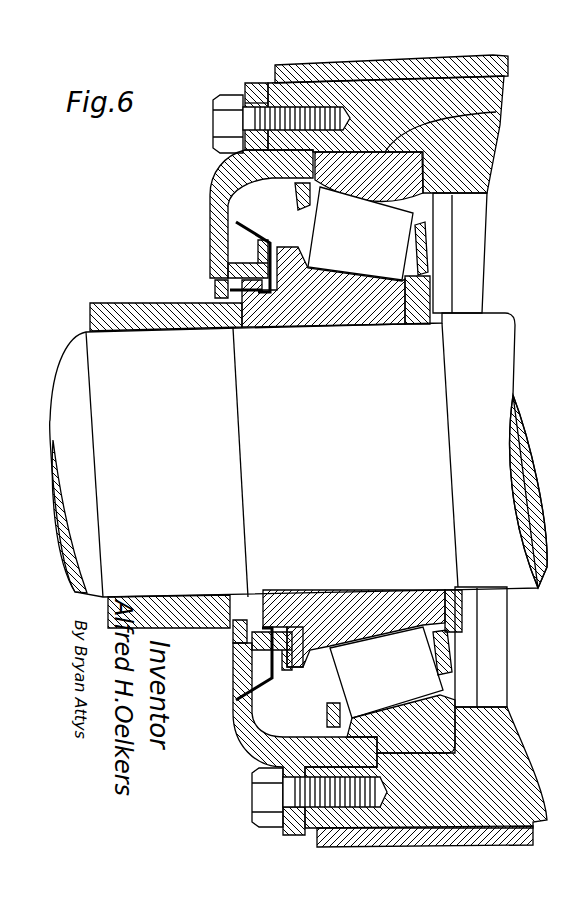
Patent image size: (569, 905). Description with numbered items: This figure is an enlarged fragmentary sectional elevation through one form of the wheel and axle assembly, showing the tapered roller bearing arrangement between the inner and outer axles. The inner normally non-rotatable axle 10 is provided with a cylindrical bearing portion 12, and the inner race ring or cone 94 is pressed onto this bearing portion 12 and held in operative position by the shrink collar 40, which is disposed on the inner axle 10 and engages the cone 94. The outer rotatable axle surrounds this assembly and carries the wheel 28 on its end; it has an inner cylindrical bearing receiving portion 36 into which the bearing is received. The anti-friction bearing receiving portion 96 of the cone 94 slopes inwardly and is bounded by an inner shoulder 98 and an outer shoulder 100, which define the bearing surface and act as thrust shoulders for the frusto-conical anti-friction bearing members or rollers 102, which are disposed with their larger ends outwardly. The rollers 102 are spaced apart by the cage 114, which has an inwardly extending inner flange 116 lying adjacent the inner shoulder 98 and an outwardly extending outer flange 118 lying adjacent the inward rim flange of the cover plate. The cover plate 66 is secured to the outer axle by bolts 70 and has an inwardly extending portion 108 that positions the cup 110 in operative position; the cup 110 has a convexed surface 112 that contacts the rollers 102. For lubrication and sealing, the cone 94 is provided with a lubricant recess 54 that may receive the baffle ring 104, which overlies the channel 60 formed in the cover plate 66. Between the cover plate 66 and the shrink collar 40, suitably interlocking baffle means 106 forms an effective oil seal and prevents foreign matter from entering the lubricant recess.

The inner normally non-rotatable axle 10 is at (498, 412).
The cylindrical bearing portion 12 is at (298, 455).
The wheel 28 is at (495, 63).
The inner cylindrical bearing receiving portion 36 is at (496, 112).
The shrink collar 40 is at (144, 303).
The lubricant recess 54 is at (265, 652).
The channel 60 is at (216, 236).
The cover plate 66 is at (218, 183).
The bolts 70 is at (222, 118).
The inner race ring or cone 94 is at (423, 290).
The anti-friction bearing receiving portion 96 is at (372, 594).
The inner shoulder 98 is at (453, 617).
The outer shoulder 100 is at (300, 645).
The frusto-conical anti-friction bearing members or rollers 102 is at (245, 705).
The baffle ring 104 is at (270, 660).
The interlocking baffle means 106 is at (233, 631).
The inwardly extending portion 108 is at (283, 750).
The cup 110 is at (443, 727).
The convexed surface 112 is at (447, 693).
The cage 114 is at (450, 663).
The inner flange 116 is at (445, 636).
The outer flange 118 is at (327, 712).